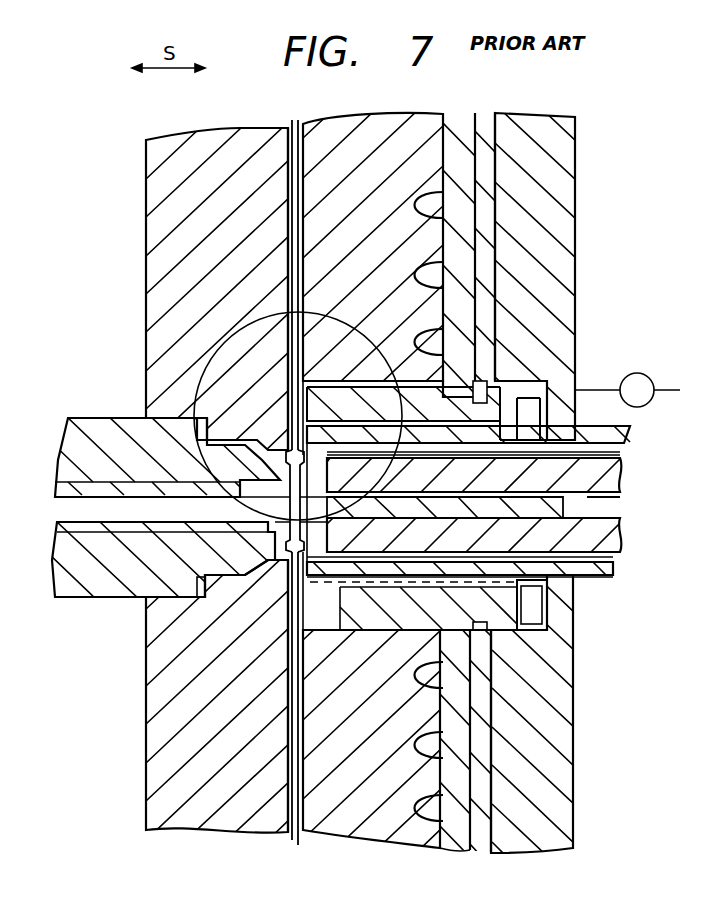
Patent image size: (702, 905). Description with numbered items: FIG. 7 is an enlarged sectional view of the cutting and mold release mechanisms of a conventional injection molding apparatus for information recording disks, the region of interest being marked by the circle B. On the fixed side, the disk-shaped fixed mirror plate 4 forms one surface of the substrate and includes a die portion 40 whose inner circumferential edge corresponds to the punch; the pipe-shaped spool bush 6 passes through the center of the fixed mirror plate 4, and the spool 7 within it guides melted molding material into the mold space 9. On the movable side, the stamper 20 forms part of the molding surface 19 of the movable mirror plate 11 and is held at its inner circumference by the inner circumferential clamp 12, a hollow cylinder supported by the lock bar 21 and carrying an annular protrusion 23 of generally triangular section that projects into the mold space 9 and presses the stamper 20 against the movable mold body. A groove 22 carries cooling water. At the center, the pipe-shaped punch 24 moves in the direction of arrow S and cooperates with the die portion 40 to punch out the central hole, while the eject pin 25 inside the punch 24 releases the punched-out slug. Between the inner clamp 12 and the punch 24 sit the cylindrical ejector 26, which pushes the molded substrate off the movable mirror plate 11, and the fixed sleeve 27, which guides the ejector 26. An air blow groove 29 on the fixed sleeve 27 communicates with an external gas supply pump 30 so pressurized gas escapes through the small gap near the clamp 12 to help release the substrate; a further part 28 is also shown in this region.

The fixed mirror plate 4 is at (207, 152).
The spool bush 6 is at (78, 567).
The spool 7 is at (72, 508).
The mold space 9 is at (290, 835).
The movable mirror plate 11 is at (418, 135).
The inner circumferential clamp 12 is at (478, 350).
The molding surface 19 is at (291, 130).
The stamper 20 is at (300, 130).
The lock bar 21 is at (486, 128).
The groove 22 is at (445, 208).
The annular protrusion 23 is at (232, 340).
The punch 24 is at (600, 538).
The eject pin 25 is at (565, 507).
The ejector 26 is at (625, 447).
The fixed sleeve 27 is at (547, 420).
The support 28 is at (517, 642).
The air blow groove 29 is at (440, 585).
The gas supply pump 30 is at (645, 374).
The die portion 40 is at (195, 633).
The detail circle B is at (200, 368).